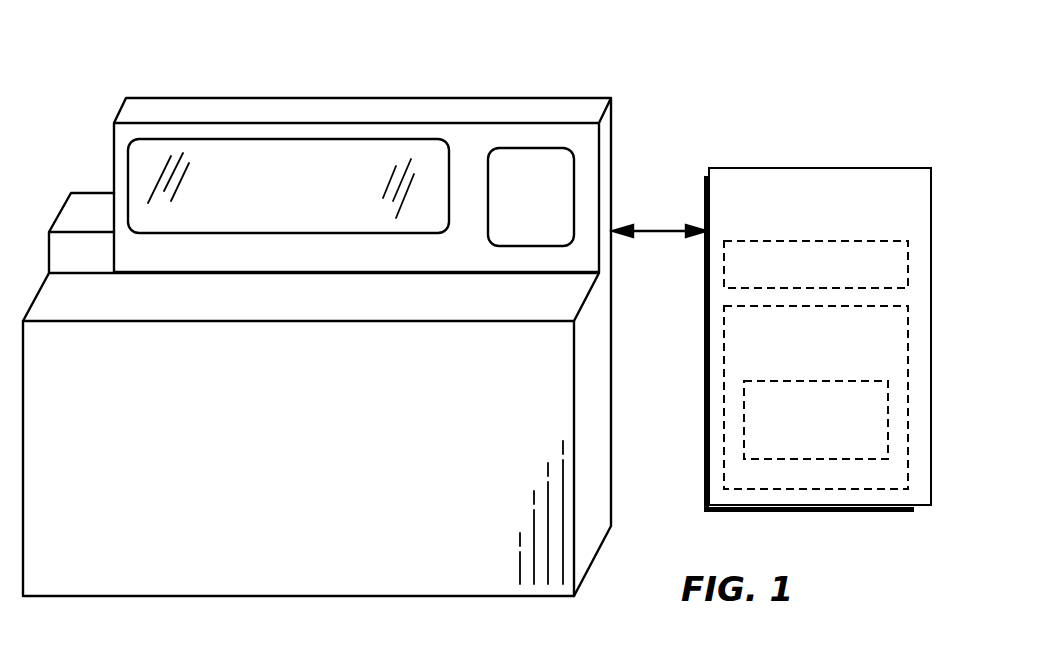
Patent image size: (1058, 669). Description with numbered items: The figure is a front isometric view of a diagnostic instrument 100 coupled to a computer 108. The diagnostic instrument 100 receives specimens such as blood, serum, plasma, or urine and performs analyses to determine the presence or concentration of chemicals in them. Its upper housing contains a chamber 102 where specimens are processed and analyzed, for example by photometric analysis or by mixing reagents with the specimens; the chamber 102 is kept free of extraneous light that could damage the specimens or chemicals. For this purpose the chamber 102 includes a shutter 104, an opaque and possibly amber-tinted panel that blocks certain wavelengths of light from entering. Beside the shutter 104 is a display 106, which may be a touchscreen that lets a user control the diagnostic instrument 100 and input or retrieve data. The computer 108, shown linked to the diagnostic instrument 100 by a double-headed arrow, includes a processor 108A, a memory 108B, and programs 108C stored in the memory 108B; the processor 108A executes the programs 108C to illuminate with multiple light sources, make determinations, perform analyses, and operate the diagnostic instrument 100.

The diagnostic instrument 100 is at (477, 312).
The chamber 102 is at (348, 323).
The shutter 104 is at (260, 138).
The display 106 is at (573, 187).
The computer 108 is at (780, 313).
The processor 108A is at (723, 261).
The memory 108B is at (723, 353).
The programs 108C is at (743, 433).